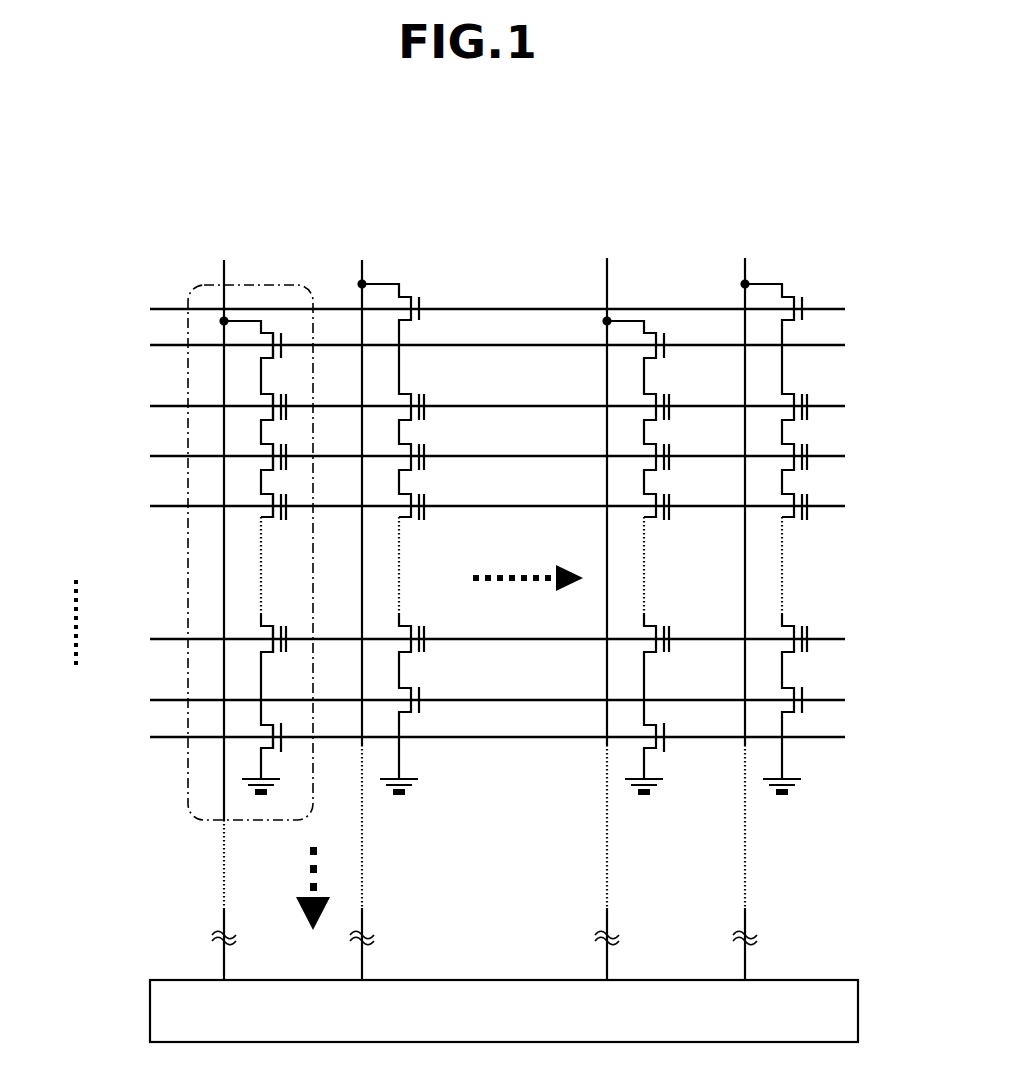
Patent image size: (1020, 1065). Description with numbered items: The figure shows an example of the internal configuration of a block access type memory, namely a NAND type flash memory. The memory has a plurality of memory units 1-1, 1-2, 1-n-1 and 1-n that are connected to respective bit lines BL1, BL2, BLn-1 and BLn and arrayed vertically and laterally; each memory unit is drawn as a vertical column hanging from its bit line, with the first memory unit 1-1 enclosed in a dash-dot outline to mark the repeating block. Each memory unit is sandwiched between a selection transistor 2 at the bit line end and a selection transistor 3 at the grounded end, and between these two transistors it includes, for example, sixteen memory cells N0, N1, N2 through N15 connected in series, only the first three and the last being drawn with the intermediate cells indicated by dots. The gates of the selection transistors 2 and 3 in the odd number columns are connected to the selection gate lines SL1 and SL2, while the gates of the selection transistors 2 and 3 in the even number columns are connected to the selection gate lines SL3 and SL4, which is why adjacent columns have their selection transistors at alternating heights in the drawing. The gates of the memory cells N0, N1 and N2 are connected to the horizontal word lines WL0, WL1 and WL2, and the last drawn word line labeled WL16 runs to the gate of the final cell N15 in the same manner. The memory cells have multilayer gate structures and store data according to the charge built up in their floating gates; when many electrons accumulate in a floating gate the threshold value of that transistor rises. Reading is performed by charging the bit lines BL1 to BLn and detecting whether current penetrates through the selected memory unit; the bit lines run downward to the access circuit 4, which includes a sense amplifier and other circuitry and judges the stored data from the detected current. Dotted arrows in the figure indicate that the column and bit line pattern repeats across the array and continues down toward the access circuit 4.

The memory unit 1-1 is at (197, 593).
The memory unit 1-2 is at (403, 593).
The memory unit 1-n-1 is at (656, 587).
The memory unit 1-n is at (787, 587).
The selection transistor 2 is at (284, 326).
The selection transistor 3 is at (284, 772).
The access circuit 4 is at (150, 1010).
The memory cell N0 is at (253, 415).
The memory cell N1 is at (253, 465).
The memory cell N2 is at (253, 513).
The memory cell N15 is at (263, 643).
The bit line BL1 is at (221, 869).
The bit line BL2 is at (365, 869).
The bit line BLn-1 is at (610, 869).
The bit line BLn is at (748, 869).
The selection gate line SL1 is at (525, 348).
The selection gate line SL2 is at (525, 739).
The selection gate line SL3 is at (525, 311).
The selection gate line SL4 is at (525, 701).
The word line WL0 is at (529, 407).
The word line WL1 is at (529, 457).
The word line WL2 is at (529, 507).
The word line 16 WL16 is at (537, 640).